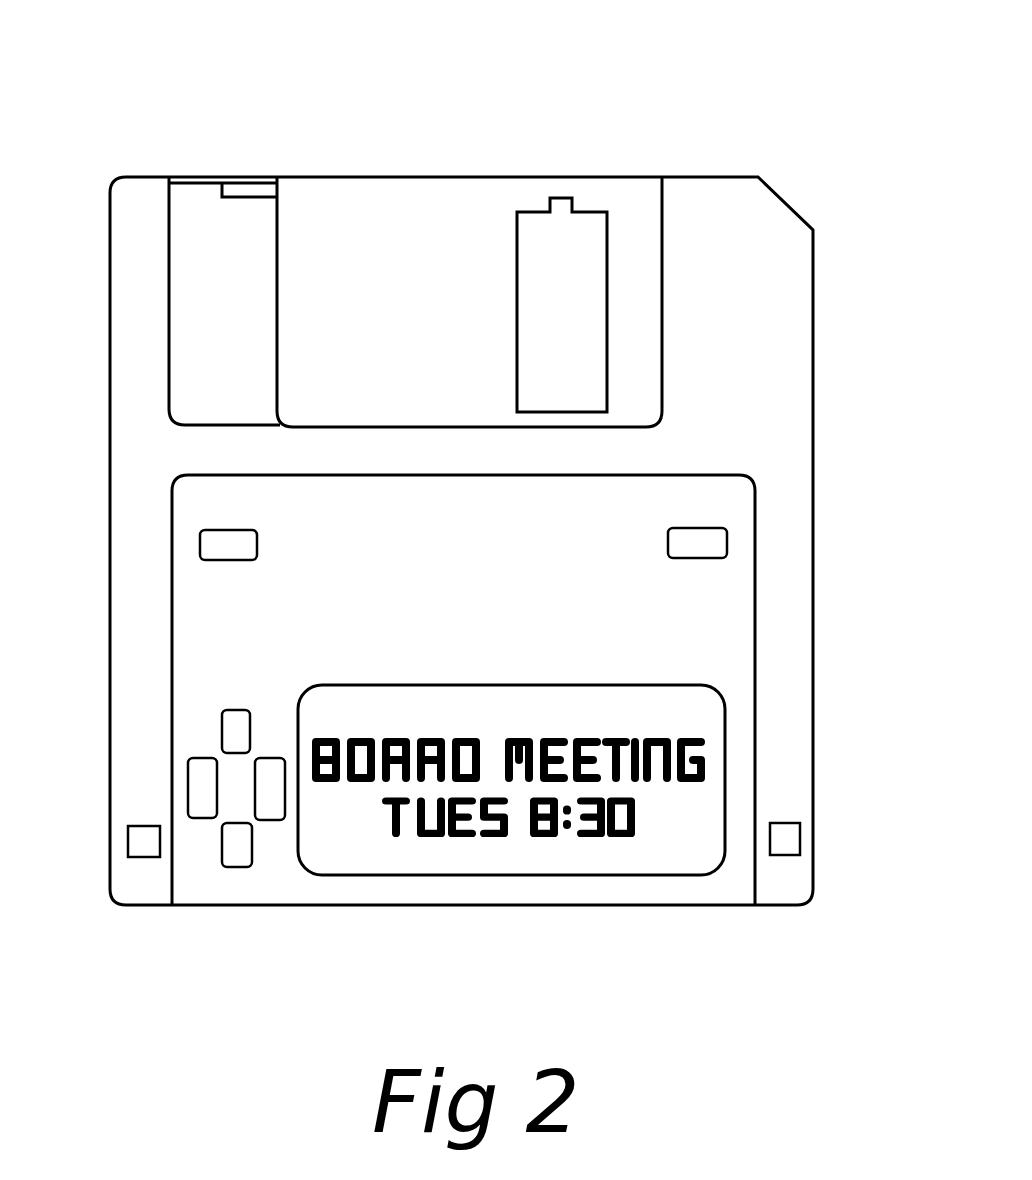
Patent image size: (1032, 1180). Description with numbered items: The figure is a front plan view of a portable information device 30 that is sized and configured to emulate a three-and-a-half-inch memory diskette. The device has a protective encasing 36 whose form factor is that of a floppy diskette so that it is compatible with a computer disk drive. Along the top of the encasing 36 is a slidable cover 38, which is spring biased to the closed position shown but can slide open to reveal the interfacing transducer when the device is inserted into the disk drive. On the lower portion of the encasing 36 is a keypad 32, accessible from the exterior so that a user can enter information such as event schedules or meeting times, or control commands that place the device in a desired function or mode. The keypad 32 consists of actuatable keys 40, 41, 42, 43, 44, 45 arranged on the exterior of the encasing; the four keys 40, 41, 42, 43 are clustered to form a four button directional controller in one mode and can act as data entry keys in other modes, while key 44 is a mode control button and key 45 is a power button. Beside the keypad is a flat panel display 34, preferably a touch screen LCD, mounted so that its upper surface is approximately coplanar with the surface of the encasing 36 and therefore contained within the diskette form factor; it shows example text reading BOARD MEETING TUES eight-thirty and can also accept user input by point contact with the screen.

The portable information device 30 is at (488, 502).
The keypad 32 is at (386, 743).
The flat panel display 34 is at (552, 865).
The protective encasing 36 is at (802, 520).
The slidable cover 38 is at (384, 228).
The key 40 is at (245, 852).
The key 41 is at (193, 792).
The key 42 is at (232, 710).
The key 43 is at (272, 805).
The mode control button 44 is at (237, 553).
The power button 45 is at (698, 553).